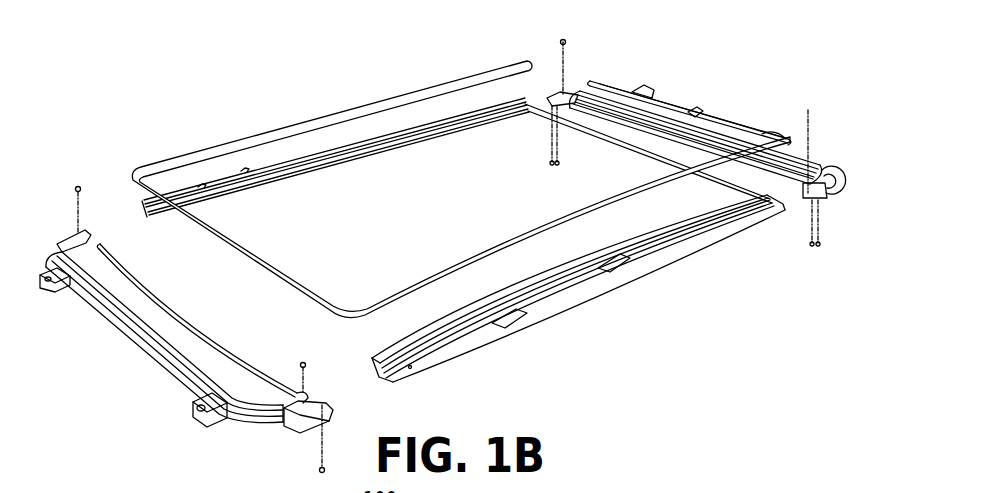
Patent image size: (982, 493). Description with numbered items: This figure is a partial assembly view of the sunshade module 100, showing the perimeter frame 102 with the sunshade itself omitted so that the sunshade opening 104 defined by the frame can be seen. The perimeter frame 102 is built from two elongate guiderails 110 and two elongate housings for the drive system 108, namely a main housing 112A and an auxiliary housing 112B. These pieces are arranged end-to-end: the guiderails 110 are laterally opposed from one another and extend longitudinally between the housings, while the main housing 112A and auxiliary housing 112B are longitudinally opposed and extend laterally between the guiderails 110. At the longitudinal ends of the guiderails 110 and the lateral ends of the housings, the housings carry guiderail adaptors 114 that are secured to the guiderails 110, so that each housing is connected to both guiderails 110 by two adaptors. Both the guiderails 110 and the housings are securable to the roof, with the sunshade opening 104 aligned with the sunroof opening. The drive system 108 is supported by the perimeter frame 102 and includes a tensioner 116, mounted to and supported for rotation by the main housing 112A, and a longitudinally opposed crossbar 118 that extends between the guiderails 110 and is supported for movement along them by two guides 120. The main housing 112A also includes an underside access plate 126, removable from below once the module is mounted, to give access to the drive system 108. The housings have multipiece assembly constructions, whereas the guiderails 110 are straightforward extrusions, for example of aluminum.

The sunshade module 100 is at (461, 180).
The perimeter frame 102 is at (358, 112).
The sunshade opening 104 is at (461, 180).
The drive system 108 is at (636, 87).
The guiderails 110 is at (416, 122).
The main housing 112A is at (653, 103).
The auxiliary housing 112B is at (143, 286).
The guiderail adaptors 114 is at (570, 92).
The tensioner 116 is at (716, 121).
The crossbar 118 is at (734, 154).
The guides 120 is at (523, 98).
The access plate 126 is at (823, 204).